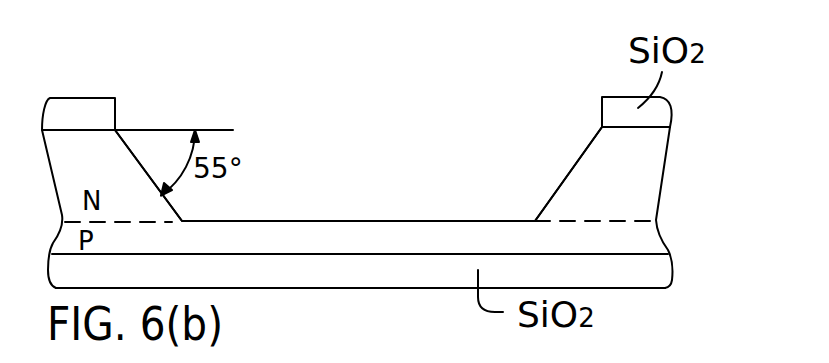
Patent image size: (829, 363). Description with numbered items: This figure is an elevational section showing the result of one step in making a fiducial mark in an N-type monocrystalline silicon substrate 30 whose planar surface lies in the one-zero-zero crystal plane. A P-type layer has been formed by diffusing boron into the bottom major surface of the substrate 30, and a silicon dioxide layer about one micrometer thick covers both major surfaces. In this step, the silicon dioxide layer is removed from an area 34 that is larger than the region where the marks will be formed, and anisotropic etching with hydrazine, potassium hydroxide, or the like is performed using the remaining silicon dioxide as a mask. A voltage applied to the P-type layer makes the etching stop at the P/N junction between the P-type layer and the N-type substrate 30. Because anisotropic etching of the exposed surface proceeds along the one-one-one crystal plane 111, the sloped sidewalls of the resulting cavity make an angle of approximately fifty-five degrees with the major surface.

The substrate 30 is at (640, 164).
The area 34 is at (602, 93).
The (111) crystal plane 111 is at (545, 206).